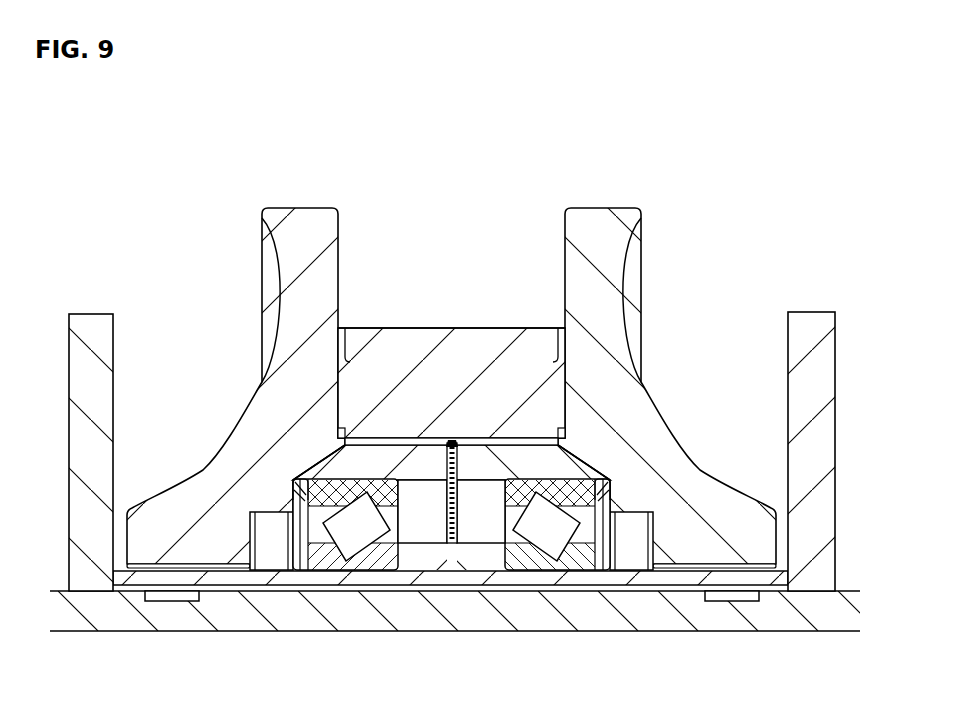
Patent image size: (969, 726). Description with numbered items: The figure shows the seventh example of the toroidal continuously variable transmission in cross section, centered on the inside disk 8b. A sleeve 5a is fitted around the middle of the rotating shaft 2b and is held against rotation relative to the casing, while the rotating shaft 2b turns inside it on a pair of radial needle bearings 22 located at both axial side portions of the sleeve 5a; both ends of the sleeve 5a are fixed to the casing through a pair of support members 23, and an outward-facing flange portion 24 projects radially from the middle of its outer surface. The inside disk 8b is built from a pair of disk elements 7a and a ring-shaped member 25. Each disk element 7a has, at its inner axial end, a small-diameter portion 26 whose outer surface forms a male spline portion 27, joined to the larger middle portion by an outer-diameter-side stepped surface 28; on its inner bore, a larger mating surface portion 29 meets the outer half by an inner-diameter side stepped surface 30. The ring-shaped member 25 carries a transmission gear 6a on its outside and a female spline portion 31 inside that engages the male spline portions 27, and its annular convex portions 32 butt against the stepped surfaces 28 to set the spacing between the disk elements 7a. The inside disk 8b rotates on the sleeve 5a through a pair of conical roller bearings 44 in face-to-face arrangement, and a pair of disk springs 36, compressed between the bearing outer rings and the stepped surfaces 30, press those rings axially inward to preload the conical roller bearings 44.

The rotating shaft 2b is at (817, 612).
The radial needle bearings 22 is at (171, 597).
The sleeve 5a is at (637, 574).
The support members 23 is at (96, 338).
The inside disk 8b is at (527, 200).
The disk elements 7a is at (296, 202).
The ring-shaped member 25 is at (481, 370).
The transmission gear 6a is at (450, 347).
The outer-diameter-side stepped surface 28 is at (350, 362).
The annular convex portions 32 is at (560, 428).
The male spline portion 27 is at (413, 457).
The small-diameter portion 26 is at (373, 460).
The disk springs 36 is at (617, 499).
The mating surface portion 29 is at (326, 496).
The inner-diameter side stepped surface 30 is at (300, 484).
The conical roller bearings 44 is at (347, 532).
The outward-facing flange portion 24 is at (452, 556).
The female spline portion 31 is at (441, 443).